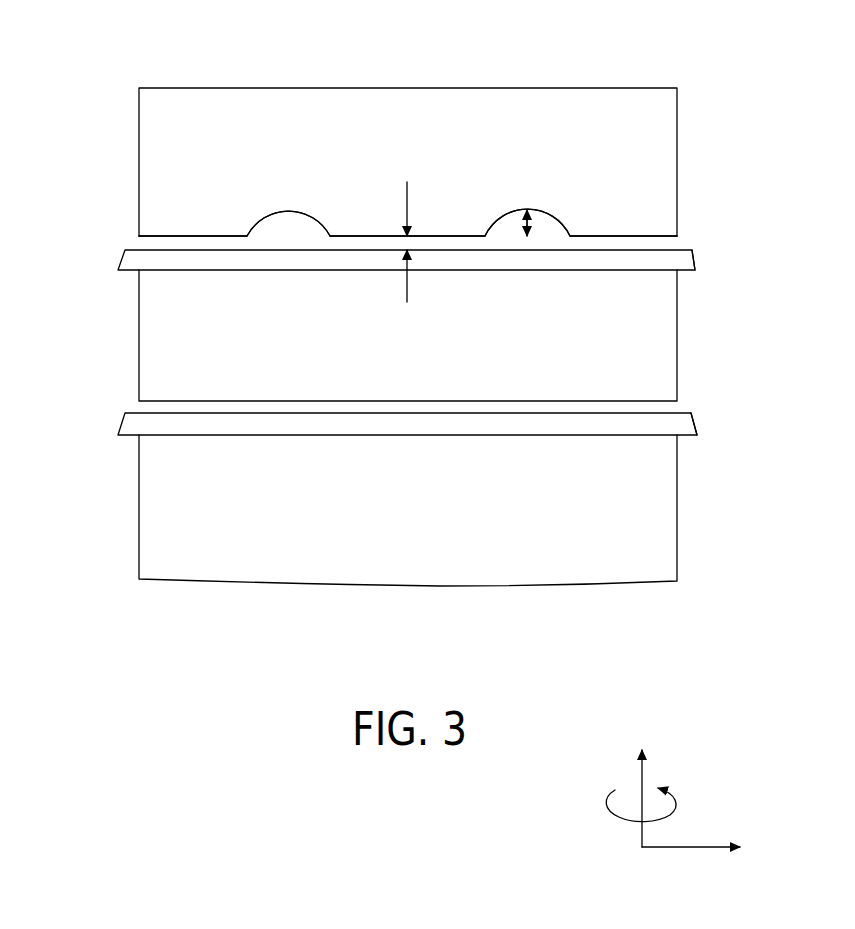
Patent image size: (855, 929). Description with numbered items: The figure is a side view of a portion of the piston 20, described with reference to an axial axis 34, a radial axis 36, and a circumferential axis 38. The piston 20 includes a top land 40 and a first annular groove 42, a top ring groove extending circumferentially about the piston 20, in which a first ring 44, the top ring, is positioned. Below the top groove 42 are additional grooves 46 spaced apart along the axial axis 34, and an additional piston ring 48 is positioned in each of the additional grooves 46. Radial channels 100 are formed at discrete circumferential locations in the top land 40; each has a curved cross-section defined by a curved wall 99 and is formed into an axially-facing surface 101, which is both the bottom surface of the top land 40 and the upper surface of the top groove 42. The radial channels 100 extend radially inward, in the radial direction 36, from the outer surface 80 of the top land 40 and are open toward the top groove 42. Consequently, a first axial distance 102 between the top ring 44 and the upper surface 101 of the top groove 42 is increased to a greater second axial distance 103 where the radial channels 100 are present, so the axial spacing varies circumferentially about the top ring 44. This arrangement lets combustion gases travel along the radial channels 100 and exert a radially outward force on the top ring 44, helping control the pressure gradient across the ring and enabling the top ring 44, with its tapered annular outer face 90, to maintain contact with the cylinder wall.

The piston 20 is at (634, 50).
The top portion 40 is at (665, 123).
The first annular groove 42 is at (672, 242).
The first ring 44 is at (130, 272).
The additional grooves 46 is at (143, 406).
The additional piston ring 48 is at (690, 426).
The outer surface 80 is at (139, 160).
The tapered annular outer face 90 is at (697, 262).
The curved wall 99 is at (285, 212).
The radial channels 100 is at (560, 218).
The axially-facing surface 101 is at (155, 238).
The first axial distance 102 is at (410, 202).
The second axial distance 103 is at (533, 240).
The axial axis 34 is at (640, 778).
The radial axis 36 is at (684, 848).
The circumferential axis 38 is at (672, 815).